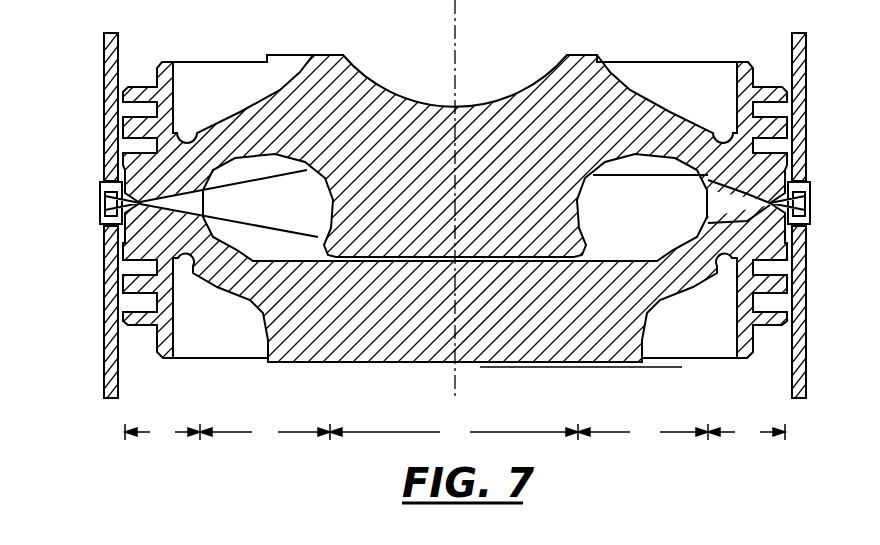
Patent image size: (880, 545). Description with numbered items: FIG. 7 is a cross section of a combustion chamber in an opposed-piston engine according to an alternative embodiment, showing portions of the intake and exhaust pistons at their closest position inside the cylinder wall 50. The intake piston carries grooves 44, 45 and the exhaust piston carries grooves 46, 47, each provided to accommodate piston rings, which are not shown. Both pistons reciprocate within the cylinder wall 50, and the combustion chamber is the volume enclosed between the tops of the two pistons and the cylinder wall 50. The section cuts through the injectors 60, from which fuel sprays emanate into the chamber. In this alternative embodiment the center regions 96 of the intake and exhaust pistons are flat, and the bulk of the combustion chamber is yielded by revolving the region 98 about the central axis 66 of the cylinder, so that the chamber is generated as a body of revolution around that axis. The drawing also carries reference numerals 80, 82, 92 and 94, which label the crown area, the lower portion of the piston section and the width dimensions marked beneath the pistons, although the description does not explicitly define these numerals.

The groove 44 is at (133, 148).
The groove 45 is at (133, 110).
The groove 46 is at (133, 268).
The groove 47 is at (133, 304).
The cylinder wall 50 is at (113, 64).
The injector 60 is at (98, 206).
The central axis 66 is at (456, 10).
The piston crown with combustion bowl 80 is at (425, 73).
The piston bottom / skirt end 82 is at (427, 364).
The outer wall width 92 is at (455, 432).
The intermediate width 94 is at (454, 432).
The center region 96 is at (454, 432).
The region 98 is at (283, 223).